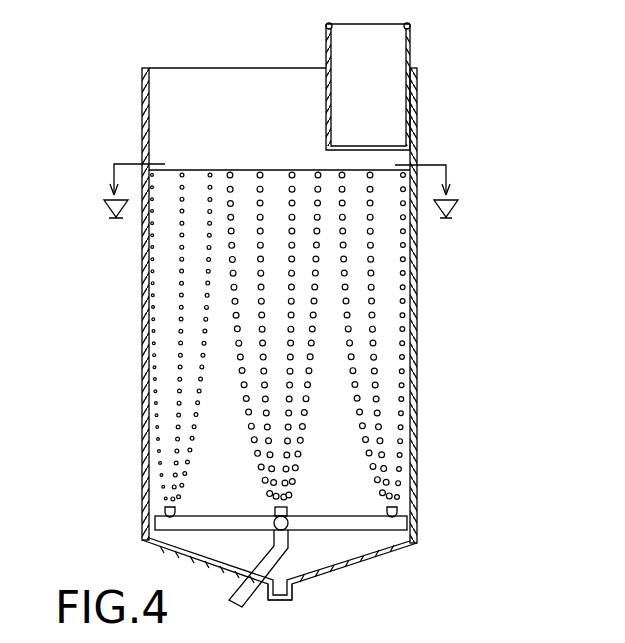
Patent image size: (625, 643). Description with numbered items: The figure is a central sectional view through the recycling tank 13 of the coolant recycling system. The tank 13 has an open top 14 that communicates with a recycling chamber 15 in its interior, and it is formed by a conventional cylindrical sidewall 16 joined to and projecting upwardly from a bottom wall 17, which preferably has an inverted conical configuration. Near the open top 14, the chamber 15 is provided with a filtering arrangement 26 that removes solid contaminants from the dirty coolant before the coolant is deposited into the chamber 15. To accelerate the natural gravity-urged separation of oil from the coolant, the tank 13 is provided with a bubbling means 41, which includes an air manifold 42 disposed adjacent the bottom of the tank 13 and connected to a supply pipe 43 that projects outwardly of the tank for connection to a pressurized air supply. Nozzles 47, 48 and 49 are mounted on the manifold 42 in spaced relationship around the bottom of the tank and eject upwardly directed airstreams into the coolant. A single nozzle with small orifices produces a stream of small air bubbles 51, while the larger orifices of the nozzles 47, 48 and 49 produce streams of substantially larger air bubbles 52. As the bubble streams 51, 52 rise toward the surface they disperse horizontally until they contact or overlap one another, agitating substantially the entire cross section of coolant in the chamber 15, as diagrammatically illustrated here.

The recycling tank 13 is at (140, 405).
The open top 14 is at (215, 67).
The recycling chamber 15 is at (335, 458).
The cylindrical sidewall 16 is at (414, 315).
The bottom wall 17 is at (322, 578).
The filtering arrangement 26 is at (417, 43).
The bubbling means 41 is at (344, 537).
The air manifold 42 is at (207, 522).
The supply pipe 43 is at (246, 592).
The nozzle 47 is at (166, 511).
The nozzle 48 is at (398, 512).
The nozzle 49 is at (286, 516).
The small air bubbles 51 is at (182, 313).
The air bubbles 52 is at (404, 270).